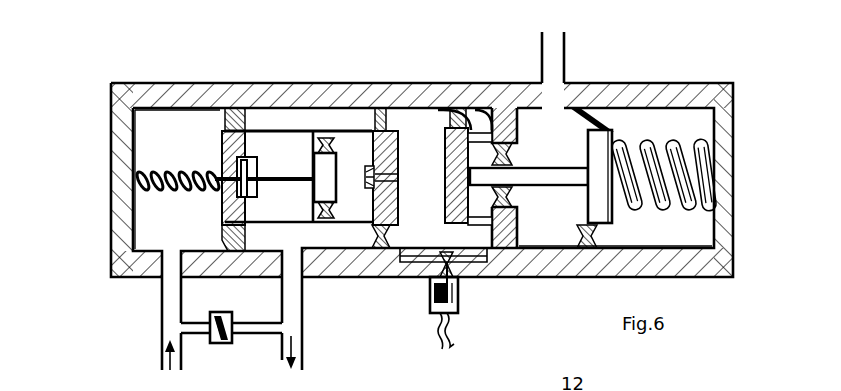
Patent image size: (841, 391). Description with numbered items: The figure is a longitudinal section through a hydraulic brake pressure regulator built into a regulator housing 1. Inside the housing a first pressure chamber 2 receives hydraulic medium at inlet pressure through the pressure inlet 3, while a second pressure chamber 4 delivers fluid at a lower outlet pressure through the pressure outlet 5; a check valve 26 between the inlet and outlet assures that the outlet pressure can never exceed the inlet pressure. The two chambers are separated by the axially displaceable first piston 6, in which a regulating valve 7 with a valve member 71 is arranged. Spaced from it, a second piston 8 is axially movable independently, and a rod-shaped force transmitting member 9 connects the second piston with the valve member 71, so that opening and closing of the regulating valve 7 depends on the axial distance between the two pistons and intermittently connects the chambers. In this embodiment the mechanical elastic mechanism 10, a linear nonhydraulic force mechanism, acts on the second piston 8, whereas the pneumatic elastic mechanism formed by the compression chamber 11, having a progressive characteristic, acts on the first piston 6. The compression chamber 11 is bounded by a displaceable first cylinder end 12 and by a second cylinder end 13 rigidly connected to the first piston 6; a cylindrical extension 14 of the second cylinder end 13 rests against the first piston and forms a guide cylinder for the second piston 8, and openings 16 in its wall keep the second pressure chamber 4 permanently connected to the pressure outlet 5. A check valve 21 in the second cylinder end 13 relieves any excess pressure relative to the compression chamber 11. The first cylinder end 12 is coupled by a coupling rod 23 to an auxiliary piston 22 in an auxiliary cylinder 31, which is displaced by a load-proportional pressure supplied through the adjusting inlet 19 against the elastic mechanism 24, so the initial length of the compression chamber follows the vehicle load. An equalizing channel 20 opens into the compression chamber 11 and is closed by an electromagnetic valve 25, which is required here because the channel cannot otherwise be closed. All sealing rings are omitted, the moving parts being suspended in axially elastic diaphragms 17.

The regulator housing 1 is at (148, 100).
The first pressure chamber 2 is at (145, 138).
The pressure inlet 3 is at (165, 280).
The second pressure chamber 4 is at (278, 150).
The pressure outlet 5 is at (292, 292).
The first piston 6 is at (225, 243).
The regulating valve 7 is at (220, 145).
The valve member 71 is at (237, 147).
The second piston 8 is at (342, 150).
The rod-shaped force transmitting member 9 is at (292, 266).
The mechanical elastic mechanism 10 is at (140, 200).
The compression chamber 11 is at (423, 140).
The first cylinder end 12 is at (462, 120).
The second cylinder end 13 is at (360, 133).
The cylindrical extension 14 is at (307, 135).
The openings 16 is at (290, 150).
The axially elastic diaphragms 17 is at (238, 245).
The adjusting inlet 19 is at (552, 63).
The equalizing channel 20 is at (467, 283).
The check valve 21 is at (406, 150).
The auxiliary piston 22 is at (602, 143).
The coupling rod 23 is at (557, 175).
The elastic mechanism 24 is at (652, 140).
The electromagnetic valve 25 is at (430, 265).
The check valve 26 is at (227, 345).
The auxiliary cylinder 31 is at (555, 227).